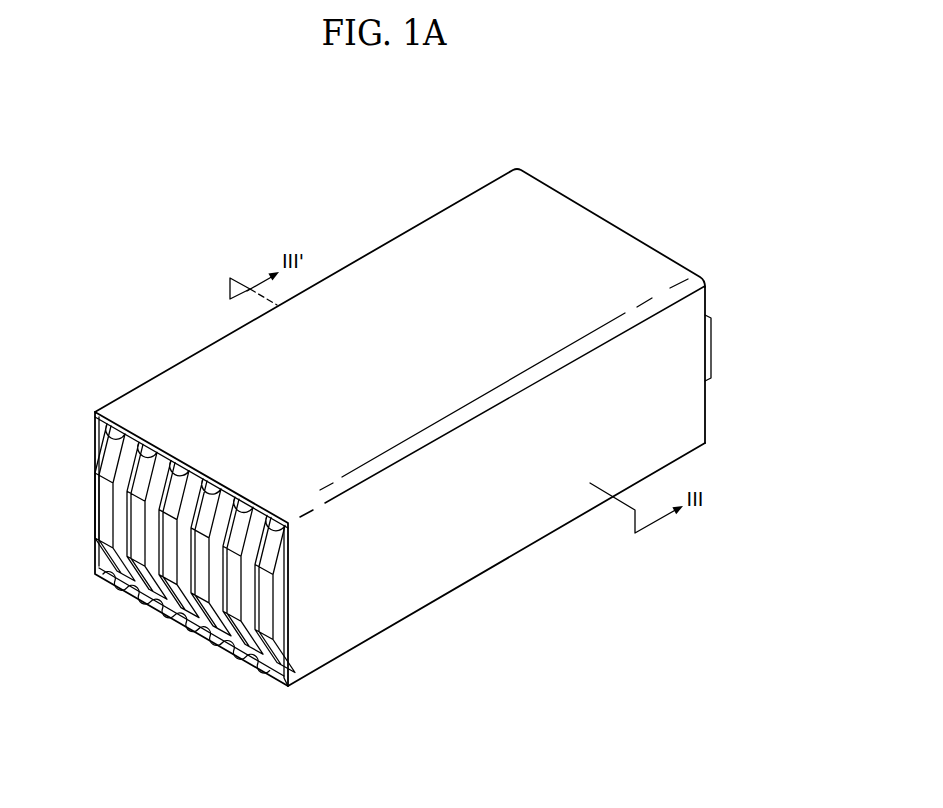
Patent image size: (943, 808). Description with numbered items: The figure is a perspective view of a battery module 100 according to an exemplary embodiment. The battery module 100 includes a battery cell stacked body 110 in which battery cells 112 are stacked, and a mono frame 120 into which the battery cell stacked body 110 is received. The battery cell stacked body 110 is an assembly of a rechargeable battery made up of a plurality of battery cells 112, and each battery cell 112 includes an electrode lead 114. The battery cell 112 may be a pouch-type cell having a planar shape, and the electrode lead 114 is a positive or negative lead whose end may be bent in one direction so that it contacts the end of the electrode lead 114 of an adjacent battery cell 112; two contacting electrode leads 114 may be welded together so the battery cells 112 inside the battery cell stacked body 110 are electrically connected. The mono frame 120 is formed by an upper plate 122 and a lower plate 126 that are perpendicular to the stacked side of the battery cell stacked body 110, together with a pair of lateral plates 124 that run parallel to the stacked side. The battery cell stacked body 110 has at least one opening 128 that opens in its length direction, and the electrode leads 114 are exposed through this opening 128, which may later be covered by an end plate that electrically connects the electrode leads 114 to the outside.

The battery module 100 is at (167, 225).
The battery cell stacked body 110 is at (81, 459).
The battery cell 112 is at (279, 632).
The electrode lead 114 is at (101, 505).
The mono frame 120 is at (409, 215).
The upper plate 122 is at (182, 378).
The lateral plate 124 is at (505, 522).
The lower plate 126 is at (405, 620).
The opening 128 is at (98, 574).